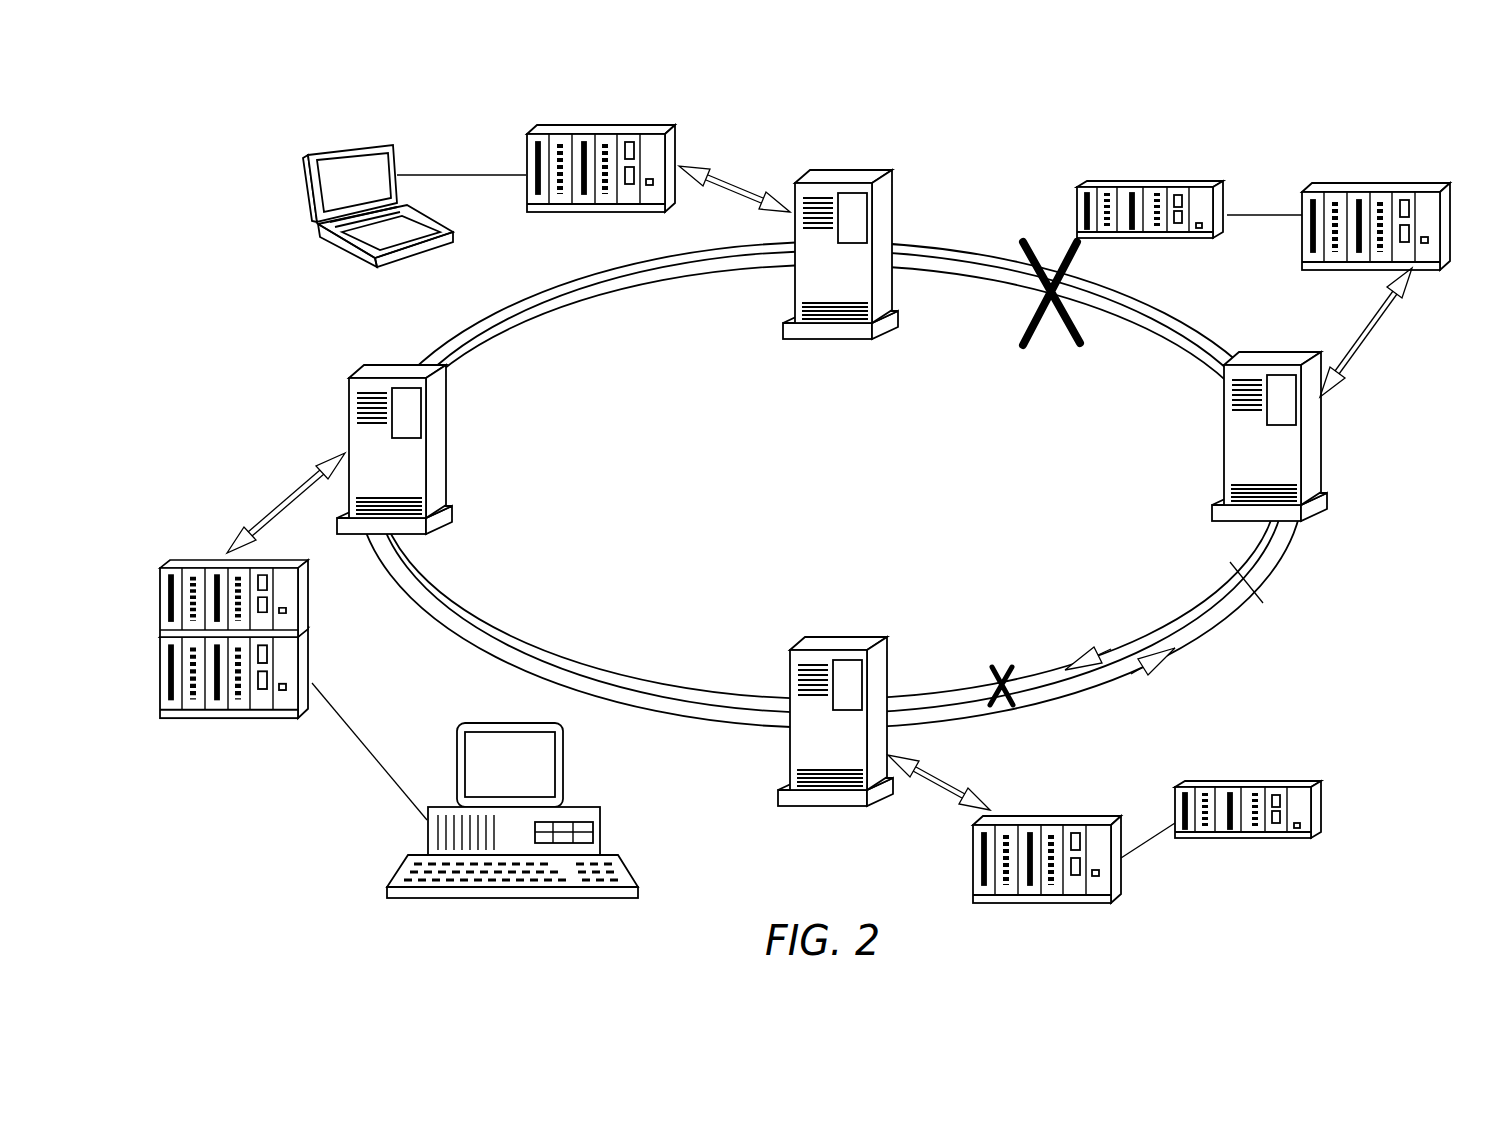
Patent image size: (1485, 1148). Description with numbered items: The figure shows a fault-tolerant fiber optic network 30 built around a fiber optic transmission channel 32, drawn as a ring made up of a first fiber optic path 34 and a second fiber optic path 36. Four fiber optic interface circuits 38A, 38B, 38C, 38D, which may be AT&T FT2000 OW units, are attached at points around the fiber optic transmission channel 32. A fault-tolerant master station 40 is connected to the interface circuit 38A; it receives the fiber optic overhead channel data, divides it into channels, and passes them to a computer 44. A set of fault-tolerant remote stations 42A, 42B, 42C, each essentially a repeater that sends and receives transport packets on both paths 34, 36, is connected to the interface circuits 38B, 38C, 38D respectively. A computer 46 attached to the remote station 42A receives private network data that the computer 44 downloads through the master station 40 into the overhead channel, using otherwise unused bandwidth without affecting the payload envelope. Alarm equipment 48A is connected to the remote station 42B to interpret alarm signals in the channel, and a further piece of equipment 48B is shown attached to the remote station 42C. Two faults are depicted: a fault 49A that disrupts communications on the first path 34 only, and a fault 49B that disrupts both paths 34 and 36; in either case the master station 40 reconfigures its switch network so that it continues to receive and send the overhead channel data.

The fault-tolerant fiber optic network 30 is at (268, 302).
The fiber optic transmission channel 32 is at (856, 482).
The first fiber optic path 34 is at (828, 482).
The second fiber optic path 36 is at (830, 485).
The fiber optic interface circuit 38A is at (429, 449).
The fiber optic interface circuit 38B is at (807, 254).
The fiber optic interface circuit 38C is at (1241, 436).
The fiber optic interface circuit 38D is at (841, 700).
The fault-tolerant master station 40 is at (291, 636).
The fault-tolerant remote station 42A is at (658, 150).
The fault-tolerant remote station 42B is at (1384, 266).
The fault-tolerant remote station 42C is at (1031, 829).
The computer 44 is at (512, 810).
The computer 46 is at (414, 185).
The alarm equipment 48A is at (1189, 185).
The storage device 48B is at (1255, 790).
The fault 49A is at (1017, 667).
The fault 49B is at (1048, 318).